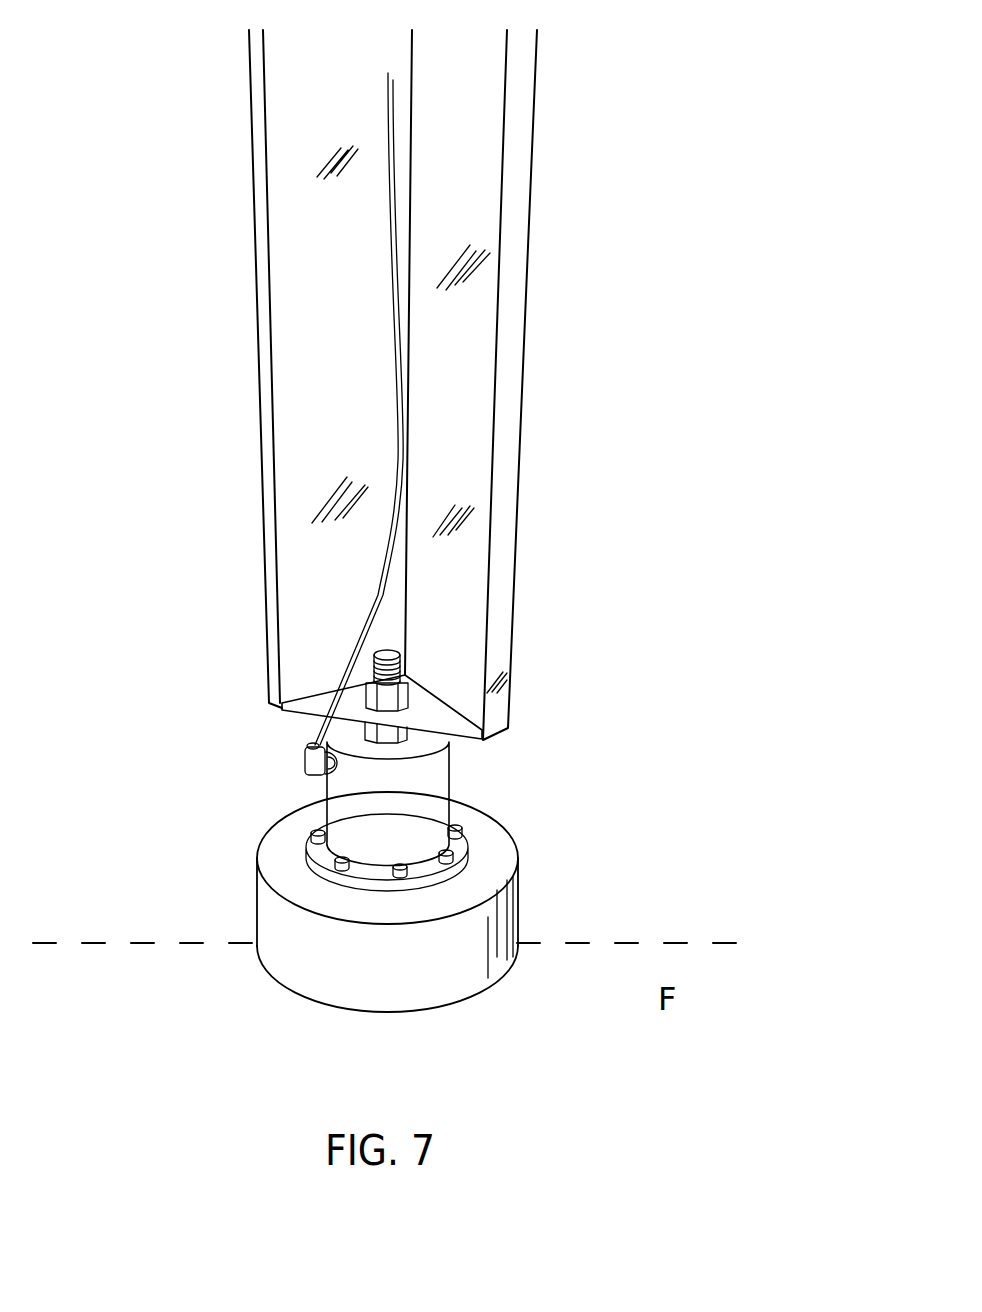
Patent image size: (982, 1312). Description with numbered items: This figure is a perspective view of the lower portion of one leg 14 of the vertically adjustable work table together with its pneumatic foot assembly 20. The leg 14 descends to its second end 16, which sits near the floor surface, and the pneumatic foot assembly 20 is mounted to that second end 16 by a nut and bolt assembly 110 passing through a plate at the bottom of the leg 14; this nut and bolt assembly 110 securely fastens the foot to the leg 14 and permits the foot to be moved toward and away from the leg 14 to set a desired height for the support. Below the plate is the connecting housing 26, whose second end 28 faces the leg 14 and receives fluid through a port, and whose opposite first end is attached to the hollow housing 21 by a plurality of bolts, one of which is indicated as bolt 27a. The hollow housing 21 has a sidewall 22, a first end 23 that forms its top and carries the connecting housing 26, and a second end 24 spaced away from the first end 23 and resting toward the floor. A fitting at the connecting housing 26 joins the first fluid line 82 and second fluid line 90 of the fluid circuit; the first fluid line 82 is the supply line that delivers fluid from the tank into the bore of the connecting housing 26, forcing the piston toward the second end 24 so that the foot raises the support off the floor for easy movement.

The leg 14 is at (368, 385).
The second end of connecting housing 28 is at (263, 385).
The second end of leg 16 is at (482, 735).
The nut and bolt assembly 110 is at (418, 648).
The connecting housing 26 is at (448, 772).
The first fluid line 82 is at (281, 424).
The second fluid line 90 is at (313, 743).
The bolt 27a is at (310, 837).
The pneumatic foot assembly 20 is at (377, 944).
The hollow housing 21 is at (438, 908).
The sidewall 22 is at (518, 880).
The first end of hollow housing 23 is at (500, 860).
The second end of hollow housing 24 is at (513, 957).